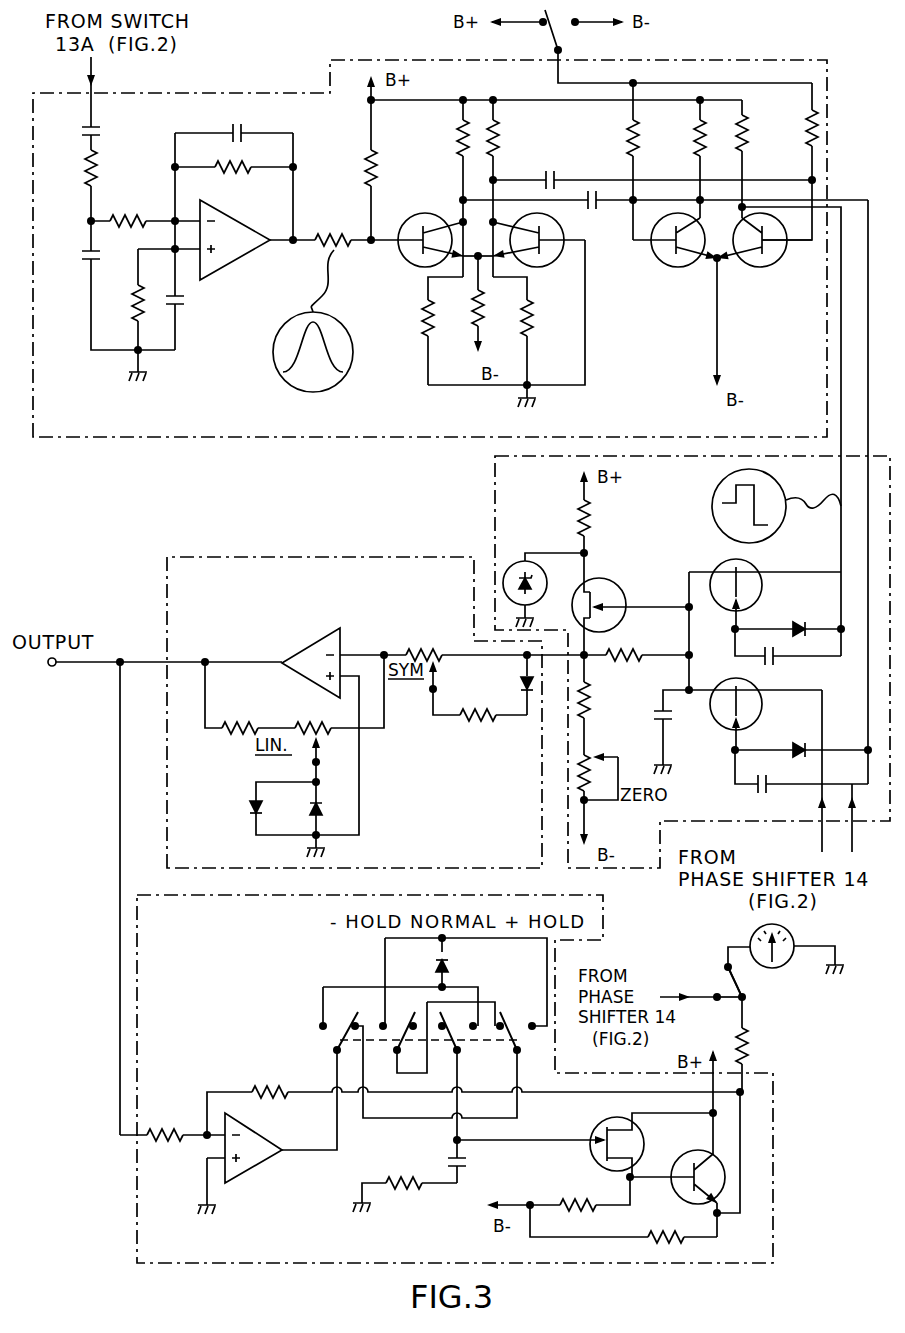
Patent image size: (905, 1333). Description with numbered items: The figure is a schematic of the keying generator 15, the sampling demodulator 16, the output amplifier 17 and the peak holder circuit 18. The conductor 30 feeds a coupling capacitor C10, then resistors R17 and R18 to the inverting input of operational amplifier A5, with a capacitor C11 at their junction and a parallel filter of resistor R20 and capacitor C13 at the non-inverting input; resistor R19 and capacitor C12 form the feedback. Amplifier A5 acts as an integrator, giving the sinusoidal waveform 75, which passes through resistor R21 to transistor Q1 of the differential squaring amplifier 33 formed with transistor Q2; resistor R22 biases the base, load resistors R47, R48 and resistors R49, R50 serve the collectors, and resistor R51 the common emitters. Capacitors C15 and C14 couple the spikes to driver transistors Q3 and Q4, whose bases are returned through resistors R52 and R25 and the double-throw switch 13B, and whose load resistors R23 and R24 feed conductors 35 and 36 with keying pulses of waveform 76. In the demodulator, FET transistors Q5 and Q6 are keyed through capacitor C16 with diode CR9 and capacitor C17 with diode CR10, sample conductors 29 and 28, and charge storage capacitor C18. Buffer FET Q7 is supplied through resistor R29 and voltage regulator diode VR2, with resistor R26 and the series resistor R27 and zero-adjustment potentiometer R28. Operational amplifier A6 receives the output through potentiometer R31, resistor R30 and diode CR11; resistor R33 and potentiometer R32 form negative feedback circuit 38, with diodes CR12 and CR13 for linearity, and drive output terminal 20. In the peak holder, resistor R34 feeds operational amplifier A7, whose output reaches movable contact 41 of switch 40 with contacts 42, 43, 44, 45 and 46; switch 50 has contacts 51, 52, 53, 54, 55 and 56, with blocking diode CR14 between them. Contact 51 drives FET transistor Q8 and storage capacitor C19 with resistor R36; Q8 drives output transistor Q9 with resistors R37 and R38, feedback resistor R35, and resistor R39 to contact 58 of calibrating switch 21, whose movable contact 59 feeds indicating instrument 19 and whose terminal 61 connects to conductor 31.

The keying generator 15 is at (362, 438).
The sampling demodulator 16 is at (495, 514).
The output amplifier 17 is at (358, 557).
The peak holder circuit 18 is at (296, 1264).
The indicating instrument 19 is at (795, 940).
The output terminal 20 is at (52, 668).
The calibrating switch 21 is at (755, 984).
The conductor 28 is at (808, 777).
The conductor 29 is at (865, 824).
The conductor 30 is at (97, 90).
The conductor 31 is at (703, 996).
The differential squaring amplifier 33 is at (446, 196).
The conductor 35 is at (866, 192).
The conductor 36 is at (836, 358).
The negative feedback circuit 38 is at (352, 755).
The double-pole double-throw switch 40 is at (366, 978).
The first movable contact 41 is at (334, 1050).
The fixed contact 42 is at (317, 1019).
The fixed contact 43 is at (363, 1013).
The movable contact 44 is at (393, 1053).
The fixed contact 45 is at (383, 1024).
The fixed contact 46 is at (404, 1034).
The double-pole double-throw switch 50 is at (517, 984).
The first movable contact 51 is at (462, 1053).
The fixed contact 52 is at (476, 1036).
The fixed contact 53 is at (443, 1010).
The second movable contact 54 is at (517, 1050).
The fixed contact 55 is at (532, 1026).
The fixed contact 56 is at (502, 1014).
The fixed contact 58 is at (744, 999).
The movable contact 59 is at (727, 967).
The fixed terminal 61 is at (720, 1004).
The waveform 75 is at (274, 369).
The waveform 76 is at (712, 491).
The double-throw switch 13B is at (571, 37).
The operational amplifier A5 is at (223, 263).
The operational amplifier A6 is at (310, 638).
The operational amplifier A7 is at (252, 1166).
The transistor Q1 is at (427, 210).
The transistor Q2 is at (538, 267).
The driver transistor Q3 is at (670, 268).
The driver transistor Q4 is at (762, 268).
The FET transistor Q5 is at (734, 559).
The FET transistor Q6 is at (730, 676).
The FET transistor Q7 is at (622, 603).
The FET transistor Q8 is at (592, 1130).
The output transistor Q9 is at (709, 1148).
The resistor R17 is at (98, 168).
The resistor R18 is at (147, 217).
The resistor R19 is at (231, 174).
The resistor R20 is at (136, 312).
The resistor R21 is at (343, 250).
The resistor R22 is at (371, 170).
The load resistor R23 is at (695, 149).
The load resistor R24 is at (744, 136).
The resistor R25 is at (810, 149).
The resistor R26 is at (641, 647).
The resistor R27 is at (591, 692).
The zero-adjustment potentiometer R28 is at (589, 785).
The resistor R29 is at (574, 505).
The resistor R30 is at (478, 720).
The potentiometer R31 is at (426, 650).
The potentiometer R32 is at (321, 708).
The resistor R33 is at (243, 722).
The resistor R34 is at (176, 1113).
The resistor R35 is at (266, 1088).
The current-limiting resistor R36 is at (405, 1191).
The resistor R37 is at (580, 1190).
The load resistor R38 is at (680, 1228).
The resistor R39 is at (759, 1040).
The load resistor R47 is at (453, 144).
The load resistor R48 is at (494, 138).
The resistor R49 is at (425, 340).
The resistor R50 is at (532, 325).
The resistor R51 is at (477, 321).
The resistor R52 is at (630, 141).
The coupling capacitor C10 is at (98, 133).
The capacitor C11 is at (80, 254).
The capacitor C12 is at (240, 129).
The capacitor C13 is at (182, 306).
The capacitor C14 is at (549, 174).
The capacitor C15 is at (594, 210).
The capacitor C16 is at (780, 670).
The capacitor C17 is at (775, 792).
The storage capacitor C18 is at (670, 718).
The storage capacitor C19 is at (438, 1163).
The diode CR9 is at (788, 615).
The diode CR10 is at (801, 737).
The diode CR11 is at (516, 682).
The diode CR12 is at (248, 808).
The diode CR13 is at (293, 830).
The blocking diode CR14 is at (443, 962).
The voltage regulator diode VR2 is at (518, 558).